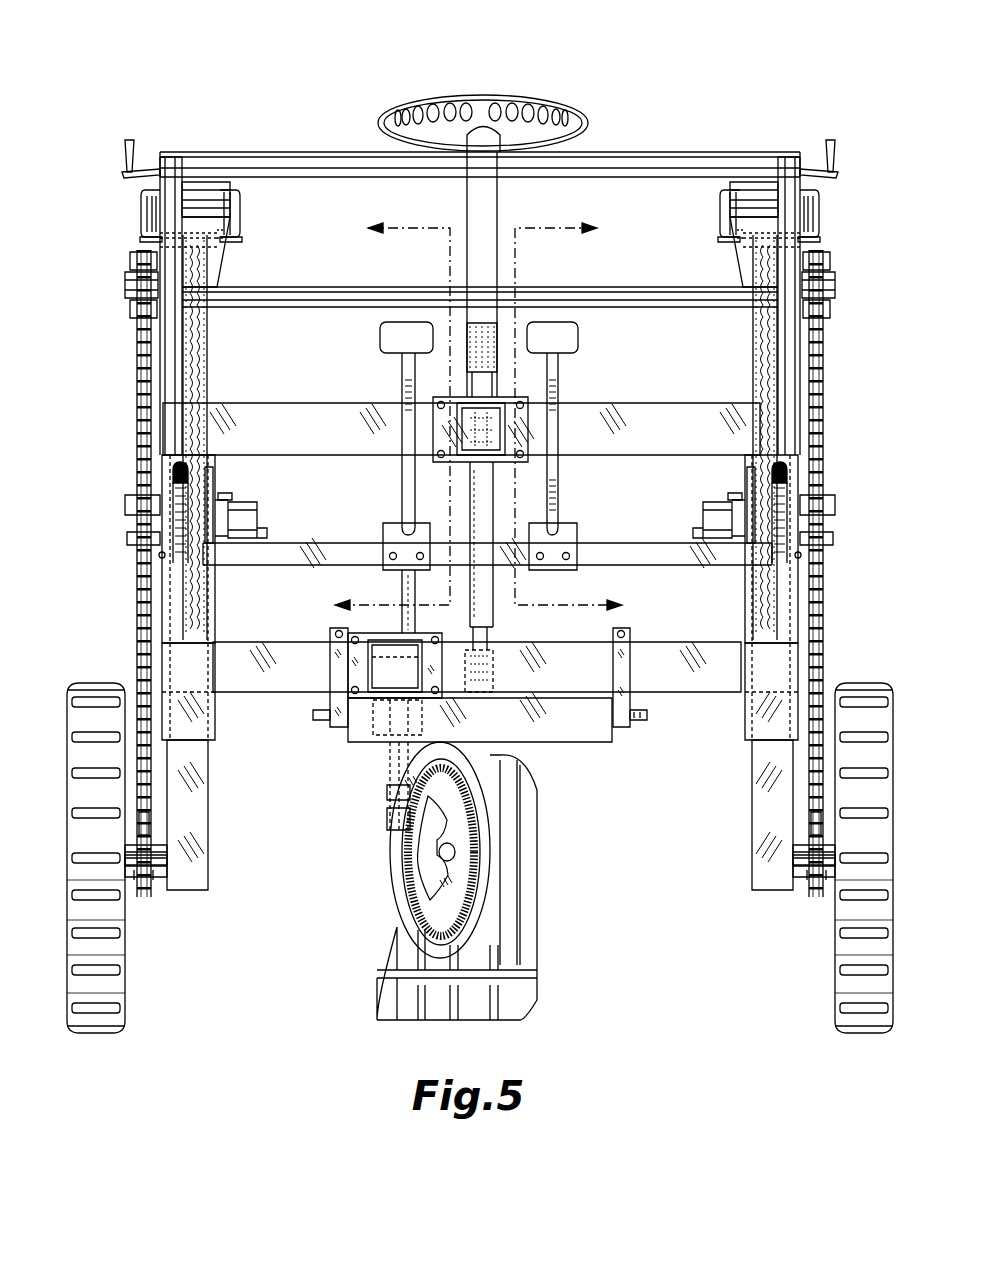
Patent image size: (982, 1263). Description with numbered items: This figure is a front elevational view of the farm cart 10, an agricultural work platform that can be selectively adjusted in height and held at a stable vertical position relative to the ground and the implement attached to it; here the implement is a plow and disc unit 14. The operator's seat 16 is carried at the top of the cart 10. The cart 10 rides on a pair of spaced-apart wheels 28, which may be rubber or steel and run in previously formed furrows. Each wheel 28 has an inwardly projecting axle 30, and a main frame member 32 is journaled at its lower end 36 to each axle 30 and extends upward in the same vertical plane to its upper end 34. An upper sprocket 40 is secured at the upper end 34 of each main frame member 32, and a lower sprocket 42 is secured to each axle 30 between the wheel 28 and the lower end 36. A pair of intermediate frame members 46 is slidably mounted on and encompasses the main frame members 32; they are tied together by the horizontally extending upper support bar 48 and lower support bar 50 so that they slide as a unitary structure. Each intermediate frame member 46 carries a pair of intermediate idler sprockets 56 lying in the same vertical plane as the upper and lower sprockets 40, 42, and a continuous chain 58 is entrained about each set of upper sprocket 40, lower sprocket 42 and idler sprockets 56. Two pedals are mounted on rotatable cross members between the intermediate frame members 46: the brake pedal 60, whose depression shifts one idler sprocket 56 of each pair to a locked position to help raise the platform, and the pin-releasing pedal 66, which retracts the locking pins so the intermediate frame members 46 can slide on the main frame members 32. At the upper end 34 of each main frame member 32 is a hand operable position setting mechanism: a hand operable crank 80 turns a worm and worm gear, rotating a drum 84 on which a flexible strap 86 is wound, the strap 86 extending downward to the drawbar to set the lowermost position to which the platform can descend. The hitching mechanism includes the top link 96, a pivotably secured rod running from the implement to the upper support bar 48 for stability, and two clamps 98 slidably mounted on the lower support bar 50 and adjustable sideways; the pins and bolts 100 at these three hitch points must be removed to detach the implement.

The farm cart 10 is at (486, 528).
The plow and disc unit 14 is at (395, 903).
The operator's seat 16 is at (378, 130).
The wheels 28 is at (125, 997).
The axle 30 is at (160, 877).
The main frame members 32 is at (208, 762).
The upper end 34 is at (838, 226).
The lower end 36 is at (480, 858).
The upper sprocket 40 is at (135, 322).
The lower sprocket 42 is at (150, 820).
The intermediate frame members 46 is at (215, 722).
The upper support bar 48 is at (297, 403).
The lower support bar 50 is at (255, 642).
The intermediate idler sprockets 56 is at (135, 470).
The continuous chains 58 is at (135, 638).
The brake pedal 60 is at (380, 337).
The pin-releasing pedal 66 is at (578, 337).
The hand operable crank 80 is at (126, 142).
The drum 84 is at (195, 185).
The flexible strap 86 is at (745, 367).
The top link 96 is at (495, 610).
The clamps 98 is at (330, 668).
The pins and bolts 100 is at (637, 722).